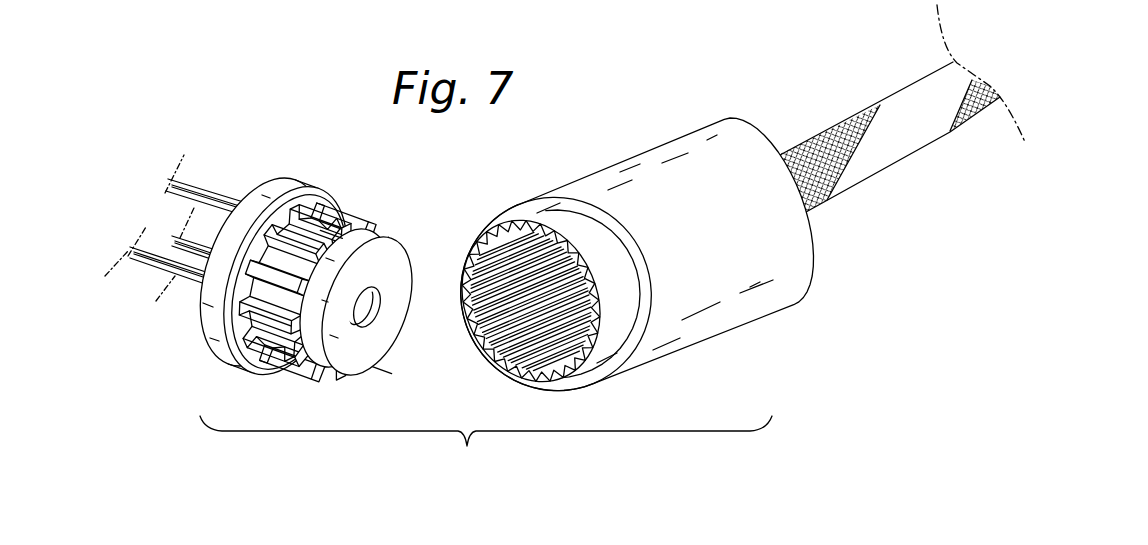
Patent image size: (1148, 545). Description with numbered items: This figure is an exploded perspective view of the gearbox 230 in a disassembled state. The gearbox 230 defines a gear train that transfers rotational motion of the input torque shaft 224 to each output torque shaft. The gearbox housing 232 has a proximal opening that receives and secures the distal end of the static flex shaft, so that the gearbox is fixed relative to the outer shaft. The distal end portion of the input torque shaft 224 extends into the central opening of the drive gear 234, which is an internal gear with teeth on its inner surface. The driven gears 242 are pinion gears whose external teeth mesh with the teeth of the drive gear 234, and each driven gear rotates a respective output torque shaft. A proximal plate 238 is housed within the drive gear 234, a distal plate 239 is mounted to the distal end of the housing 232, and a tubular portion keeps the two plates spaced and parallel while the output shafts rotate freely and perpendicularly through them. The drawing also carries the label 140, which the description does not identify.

The cables 140 is at (191, 177).
The input torque shaft 224 is at (902, 108).
The gearbox 230 is at (566, 150).
The gearbox housing 232 is at (738, 146).
The drive gear 234 is at (518, 213).
The proximal plate 238 is at (378, 253).
The distal plate 239 is at (272, 178).
The driven gears 242 is at (320, 213).